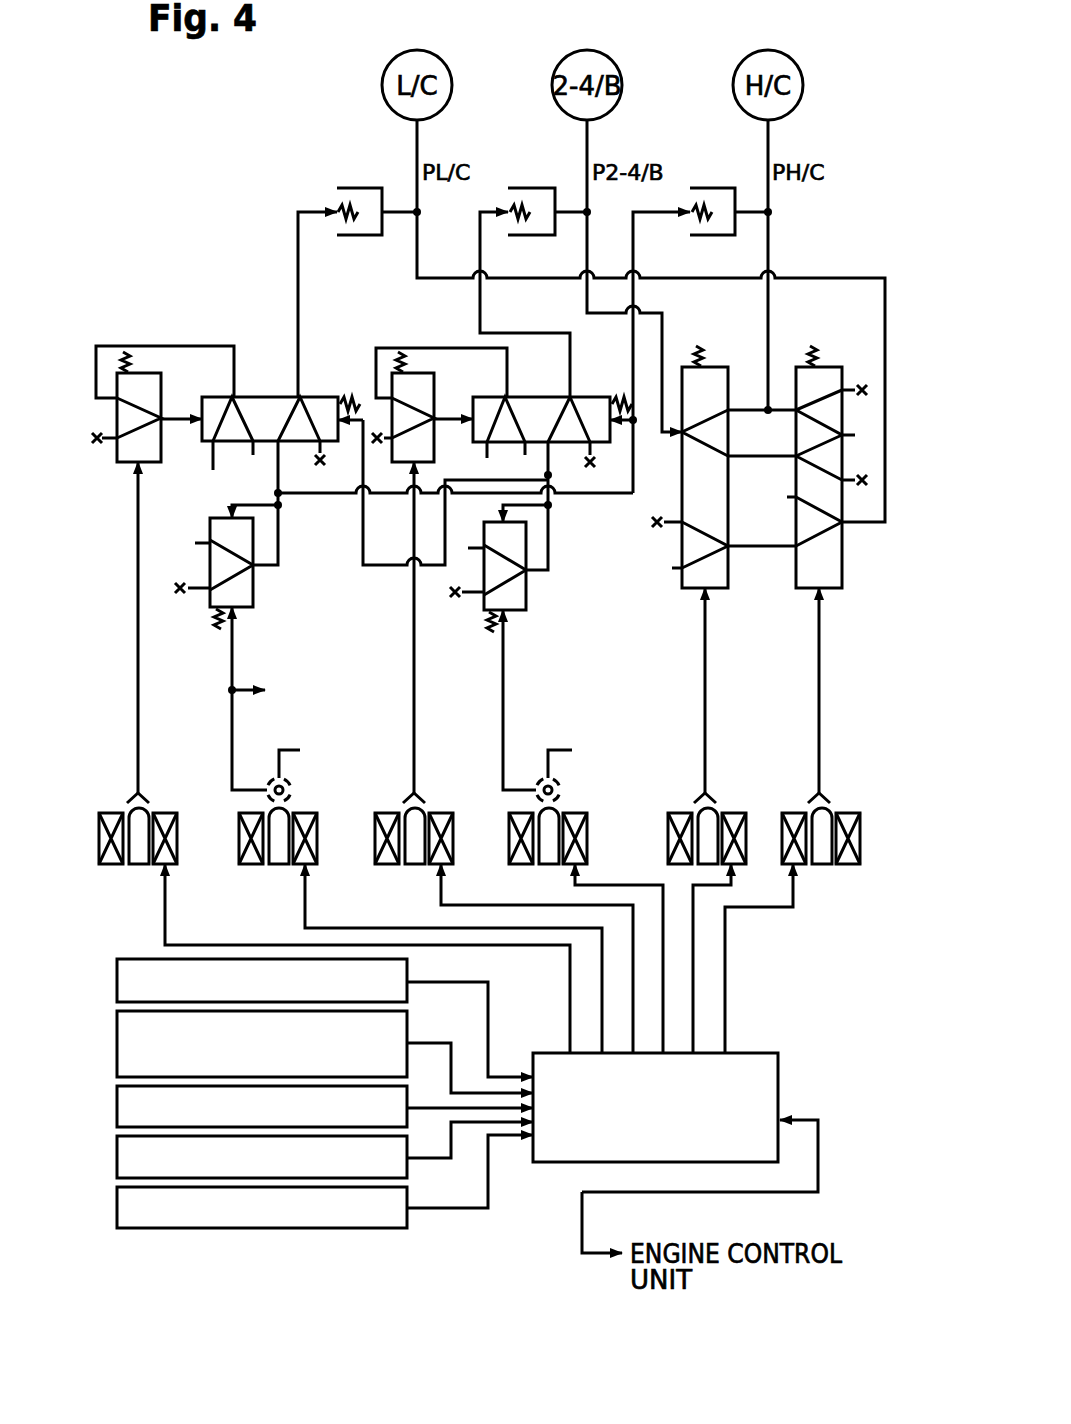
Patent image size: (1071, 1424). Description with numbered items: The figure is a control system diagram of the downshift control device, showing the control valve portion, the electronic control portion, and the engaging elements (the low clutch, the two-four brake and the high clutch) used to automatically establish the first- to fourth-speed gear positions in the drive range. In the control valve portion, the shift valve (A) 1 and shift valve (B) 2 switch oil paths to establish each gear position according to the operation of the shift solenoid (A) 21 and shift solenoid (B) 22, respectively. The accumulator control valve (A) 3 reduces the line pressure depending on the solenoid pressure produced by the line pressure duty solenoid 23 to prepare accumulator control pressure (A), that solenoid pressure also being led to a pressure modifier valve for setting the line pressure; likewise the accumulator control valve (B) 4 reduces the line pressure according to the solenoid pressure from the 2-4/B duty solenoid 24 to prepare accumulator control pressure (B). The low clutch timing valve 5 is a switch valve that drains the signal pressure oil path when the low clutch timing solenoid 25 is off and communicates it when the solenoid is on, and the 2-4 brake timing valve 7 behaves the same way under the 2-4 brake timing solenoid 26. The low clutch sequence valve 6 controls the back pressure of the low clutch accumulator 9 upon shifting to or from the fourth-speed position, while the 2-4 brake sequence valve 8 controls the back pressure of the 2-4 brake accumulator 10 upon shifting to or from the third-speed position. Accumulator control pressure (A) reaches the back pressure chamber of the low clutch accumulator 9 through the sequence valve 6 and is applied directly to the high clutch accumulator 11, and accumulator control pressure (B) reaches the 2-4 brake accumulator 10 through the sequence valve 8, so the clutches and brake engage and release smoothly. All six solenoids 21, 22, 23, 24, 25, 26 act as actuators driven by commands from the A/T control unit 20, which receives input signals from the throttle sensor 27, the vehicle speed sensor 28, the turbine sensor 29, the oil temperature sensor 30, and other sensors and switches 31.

The shift valve (A) 1 is at (712, 365).
The shift valve (B) 2 is at (830, 365).
The accumulator control valve (A) 3 is at (253, 590).
The accumulator control valve (B) 4 is at (526, 592).
The low clutch timing valve 5 is at (161, 393).
The low clutch sequence valve 6 is at (320, 397).
The 2-4 brake timing valve 7 is at (434, 393).
The 2-4 brake sequence valve 8 is at (582, 397).
The low clutch accumulator 9 is at (352, 186).
The 2-4 brake accumulator 10 is at (525, 186).
The high clutch accumulator 11 is at (707, 186).
The A/T control unit 20 is at (780, 1100).
The shift solenoid (A) 21 is at (742, 812).
The shift solenoid (B) 22 is at (852, 812).
The line pressure duty solenoid 23 is at (318, 812).
The 2-4/B duty solenoid 24 is at (582, 812).
The low clutch timing solenoid 25 is at (178, 812).
The 2-4 brake timing solenoid 26 is at (448, 812).
The throttle sensor 27 is at (117, 982).
The vehicle speed sensor 28 is at (117, 1042).
The turbine sensor 29 is at (117, 1109).
The oil temperature sensor 30 is at (117, 1157).
The other sensors and switches 31 is at (117, 1209).